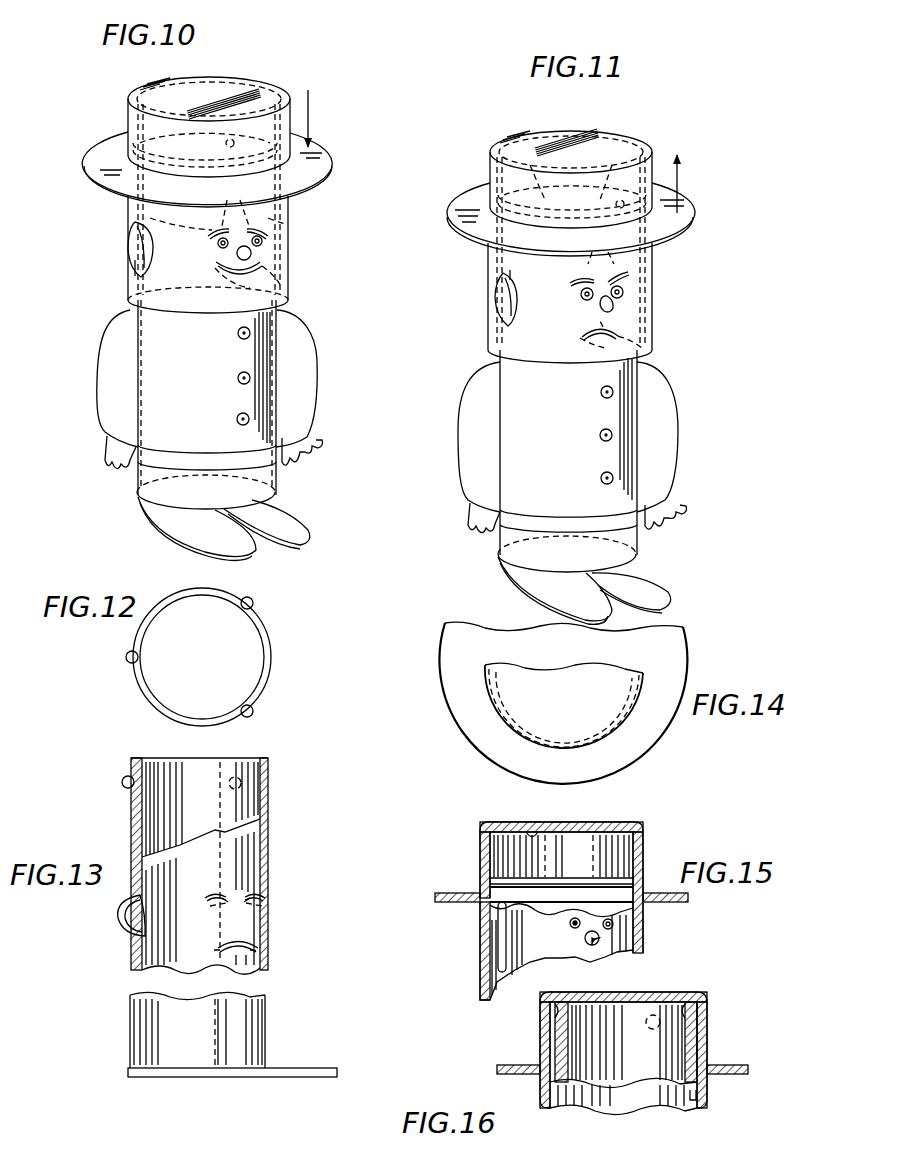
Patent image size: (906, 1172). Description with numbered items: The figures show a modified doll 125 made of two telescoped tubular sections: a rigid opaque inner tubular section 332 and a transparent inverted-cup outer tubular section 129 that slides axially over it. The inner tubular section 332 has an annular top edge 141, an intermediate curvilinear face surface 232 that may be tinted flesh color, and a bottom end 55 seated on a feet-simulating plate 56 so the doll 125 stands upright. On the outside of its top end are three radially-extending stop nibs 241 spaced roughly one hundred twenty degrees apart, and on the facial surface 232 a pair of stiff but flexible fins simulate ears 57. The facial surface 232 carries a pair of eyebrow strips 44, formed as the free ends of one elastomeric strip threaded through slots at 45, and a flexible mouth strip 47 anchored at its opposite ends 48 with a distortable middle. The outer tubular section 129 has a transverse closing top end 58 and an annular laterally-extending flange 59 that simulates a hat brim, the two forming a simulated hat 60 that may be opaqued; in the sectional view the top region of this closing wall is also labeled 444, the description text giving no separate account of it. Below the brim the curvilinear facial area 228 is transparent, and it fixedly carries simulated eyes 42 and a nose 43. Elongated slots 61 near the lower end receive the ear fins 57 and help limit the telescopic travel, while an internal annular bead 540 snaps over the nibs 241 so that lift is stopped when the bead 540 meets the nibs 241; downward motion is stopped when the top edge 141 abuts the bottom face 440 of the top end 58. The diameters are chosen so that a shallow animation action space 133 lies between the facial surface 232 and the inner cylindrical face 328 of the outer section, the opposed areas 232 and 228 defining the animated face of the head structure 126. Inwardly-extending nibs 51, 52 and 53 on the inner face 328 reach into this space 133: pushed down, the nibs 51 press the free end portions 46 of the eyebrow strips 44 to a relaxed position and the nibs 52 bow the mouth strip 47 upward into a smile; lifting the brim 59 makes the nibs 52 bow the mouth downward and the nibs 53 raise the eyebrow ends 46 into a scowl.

In FIG. 10, the eyes 42 is at (216, 244).
In FIG. 11, the eyes 42 is at (583, 298).
In FIG. 15, the eyes 42 is at (570, 924).
In FIG. 10, the nose 43 is at (252, 255).
In FIG. 11, the nose 43 is at (614, 306).
In FIG. 15, the nose 43 is at (600, 940).
In FIG. 10, the eyebrow strips 44 is at (238, 209).
In FIG. 11, the eyebrow strips 44 is at (599, 257).
In FIG. 13, the eyebrow strips 44 is at (226, 893).
In FIG. 13, the anchoring slots 45 is at (212, 906).
In FIG. 13, the free end portions 46 is at (222, 899).
In FIG. 10, the mouth strip 47 is at (290, 297).
In FIG. 11, the mouth strip 47 is at (643, 358).
In FIG. 13, the mouth strip 47 is at (254, 944).
In FIG. 13, the mouth strip ends 48 is at (218, 948).
In FIG. 10, the nibs 51 is at (140, 213).
In FIG. 11, the nibs 51 is at (652, 253).
In FIG. 10, the nibs 52 is at (292, 271).
In FIG. 11, the nibs 52 is at (646, 336).
In FIG. 11, the nibs 53 is at (645, 276).
In FIG. 10, the bottom end 55 is at (265, 494).
In FIG. 11, the bottom end 55 is at (614, 560).
In FIG. 13, the bottom end 55 is at (204, 1060).
In FIG. 10, the feet-simulating plate 56 is at (283, 523).
In FIG. 11, the feet-simulating plate 56 is at (648, 582).
In FIG. 13, the feet-simulating plate 56 is at (282, 1068).
In FIG. 10, the ears 57 is at (140, 243).
In FIG. 11, the ears 57 is at (495, 292).
In FIG. 13, the ears 57 is at (130, 913).
In FIG. 14, the ears 57 is at (488, 701).
In FIG. 10, the top end 58 is at (221, 97).
In FIG. 11, the top end 58 is at (558, 142).
In FIG. 14, the top end 58 is at (553, 708).
In FIG. 15, the top end 58 is at (590, 822).
In FIG. 16, the top end 58 is at (606, 992).
In FIG. 10, the flange 59 is at (315, 150).
In FIG. 11, the flange 59 is at (712, 184).
In FIG. 15, the flange 59 is at (466, 894).
In FIG. 16, the flange 59 is at (497, 1068).
In FIG. 10, the hat 60 is at (120, 138).
In FIG. 11, the hat 60 is at (486, 195).
In FIG. 14, the hat 60 is at (672, 662).
In FIG. 15, the hat 60 is at (478, 852).
In FIG. 16, the hat 60 is at (708, 1034).
In FIG. 10, the slots 61 is at (147, 270).
In FIG. 11, the slots 61 is at (510, 277).
In FIG. 15, the slots 61 is at (497, 945).
In FIG. 10, the doll 125 is at (320, 343).
In FIG. 11, the doll 125 is at (671, 388).
In FIG. 10, the head structure 126 is at (293, 240).
In FIG. 11, the head structure 126 is at (705, 285).
In FIG. 10, the outer tubular section 129 is at (130, 293).
In FIG. 11, the outer tubular section 129 is at (488, 336).
In FIG. 15, the outer tubular section 129 is at (478, 980).
In FIG. 16, the outer tubular section 129 is at (700, 1108).
In FIG. 16, the animation action space 133 is at (551, 1085).
In FIG. 12, the annular top edge 141 is at (190, 592).
In FIG. 13, the annular top edge 141 is at (141, 763).
In FIG. 16, the annular top edge 141 is at (692, 1002).
In FIG. 10, the curvilinear facial area 228 is at (172, 308).
In FIG. 11, the curvilinear facial area 228 is at (548, 330).
In FIG. 15, the curvilinear facial area 228 is at (560, 950).
In FIG. 13, the curvilinear face surface 232 is at (257, 861).
In FIG. 10, the nibs 241 is at (283, 85).
In FIG. 11, the nibs 241 is at (659, 156).
In FIG. 12, the nibs 241 is at (250, 598).
In FIG. 13, the nibs 241 is at (122, 785).
In FIG. 16, the nibs 241 is at (712, 1014).
In FIG. 16, the inner cylindrical face 328 is at (697, 1097).
In FIG. 10, the inner tubular section 332 is at (175, 407).
In FIG. 11, the inner tubular section 332 is at (630, 448).
In FIG. 12, the inner tubular section 332 is at (272, 640).
In FIG. 13, the inner tubular section 332 is at (270, 801).
In FIG. 15, the bottom face 440 is at (522, 822).
In FIG. 16, the top wall 444 is at (666, 992).
In FIG. 10, the internal annular bead 540 is at (312, 104).
In FIG. 11, the internal annular bead 540 is at (492, 141).
In FIG. 15, the internal annular bead 540 is at (612, 876).
In FIG. 16, the internal annular bead 540 is at (548, 1054).